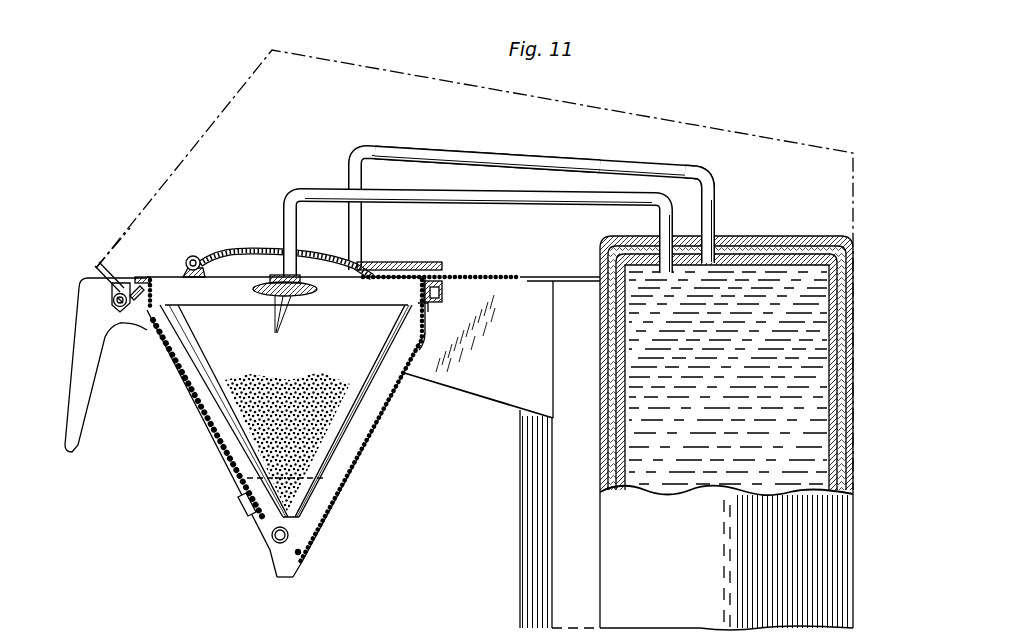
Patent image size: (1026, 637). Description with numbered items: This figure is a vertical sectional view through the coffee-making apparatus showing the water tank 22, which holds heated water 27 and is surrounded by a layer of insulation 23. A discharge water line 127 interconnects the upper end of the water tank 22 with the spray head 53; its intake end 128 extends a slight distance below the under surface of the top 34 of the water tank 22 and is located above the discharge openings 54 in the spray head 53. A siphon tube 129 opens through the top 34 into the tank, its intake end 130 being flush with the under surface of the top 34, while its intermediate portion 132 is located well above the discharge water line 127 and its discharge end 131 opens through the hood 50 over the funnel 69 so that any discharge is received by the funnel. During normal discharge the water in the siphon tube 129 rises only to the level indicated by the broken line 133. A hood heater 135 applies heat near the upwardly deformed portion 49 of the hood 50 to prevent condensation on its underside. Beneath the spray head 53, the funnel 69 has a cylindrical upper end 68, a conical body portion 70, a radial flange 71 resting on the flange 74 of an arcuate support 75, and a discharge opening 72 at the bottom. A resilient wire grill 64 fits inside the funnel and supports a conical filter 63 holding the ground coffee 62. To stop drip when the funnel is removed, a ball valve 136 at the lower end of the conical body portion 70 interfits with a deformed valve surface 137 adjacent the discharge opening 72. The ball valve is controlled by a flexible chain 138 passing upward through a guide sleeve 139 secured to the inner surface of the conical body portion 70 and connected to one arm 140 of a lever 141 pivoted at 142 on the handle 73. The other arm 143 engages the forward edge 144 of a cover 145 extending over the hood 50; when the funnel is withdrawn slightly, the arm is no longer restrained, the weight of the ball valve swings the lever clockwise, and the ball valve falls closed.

The cover 145 is at (145, 197).
The forward edge 144 is at (100, 263).
The other arm 143 is at (98, 271).
The pivot 142 is at (123, 292).
The lever 141 is at (113, 323).
The one arm 140 is at (150, 277).
The handle 73 is at (80, 422).
The hood heater 135 is at (198, 257).
The upwardly deformed portion 49 is at (249, 247).
The spray head 53 is at (293, 281).
The discharge openings 54 is at (276, 335).
The discharge end 131 is at (366, 262).
The radial flange 71 is at (432, 276).
The hood 50 is at (485, 264).
The intermediate portion 132 is at (506, 160).
The discharge water line 127 is at (592, 200).
The siphon tube 129 is at (667, 165).
The broken line 133 is at (715, 185).
The intake end 128 is at (659, 238).
The intake end 130 is at (702, 240).
The water tank 22 is at (600, 260).
The layer of insulation 23 is at (600, 277).
The top 34 is at (777, 256).
The water 27 is at (717, 300).
The arcuate support 75 is at (443, 292).
The flange 74 is at (430, 305).
The cylindrical upper end 68 is at (425, 328).
The conical filter 63 is at (372, 372).
The wire grill 64 is at (372, 397).
The ground coffee 62 is at (320, 418).
The conical body portion 70 is at (350, 457).
The funnel 69 is at (183, 420).
The chain 138 is at (217, 457).
The guide sleeve 139 is at (247, 515).
The ball valve 136 is at (290, 532).
The deformed valve surface 137 is at (303, 552).
The discharge opening 72 is at (287, 578).